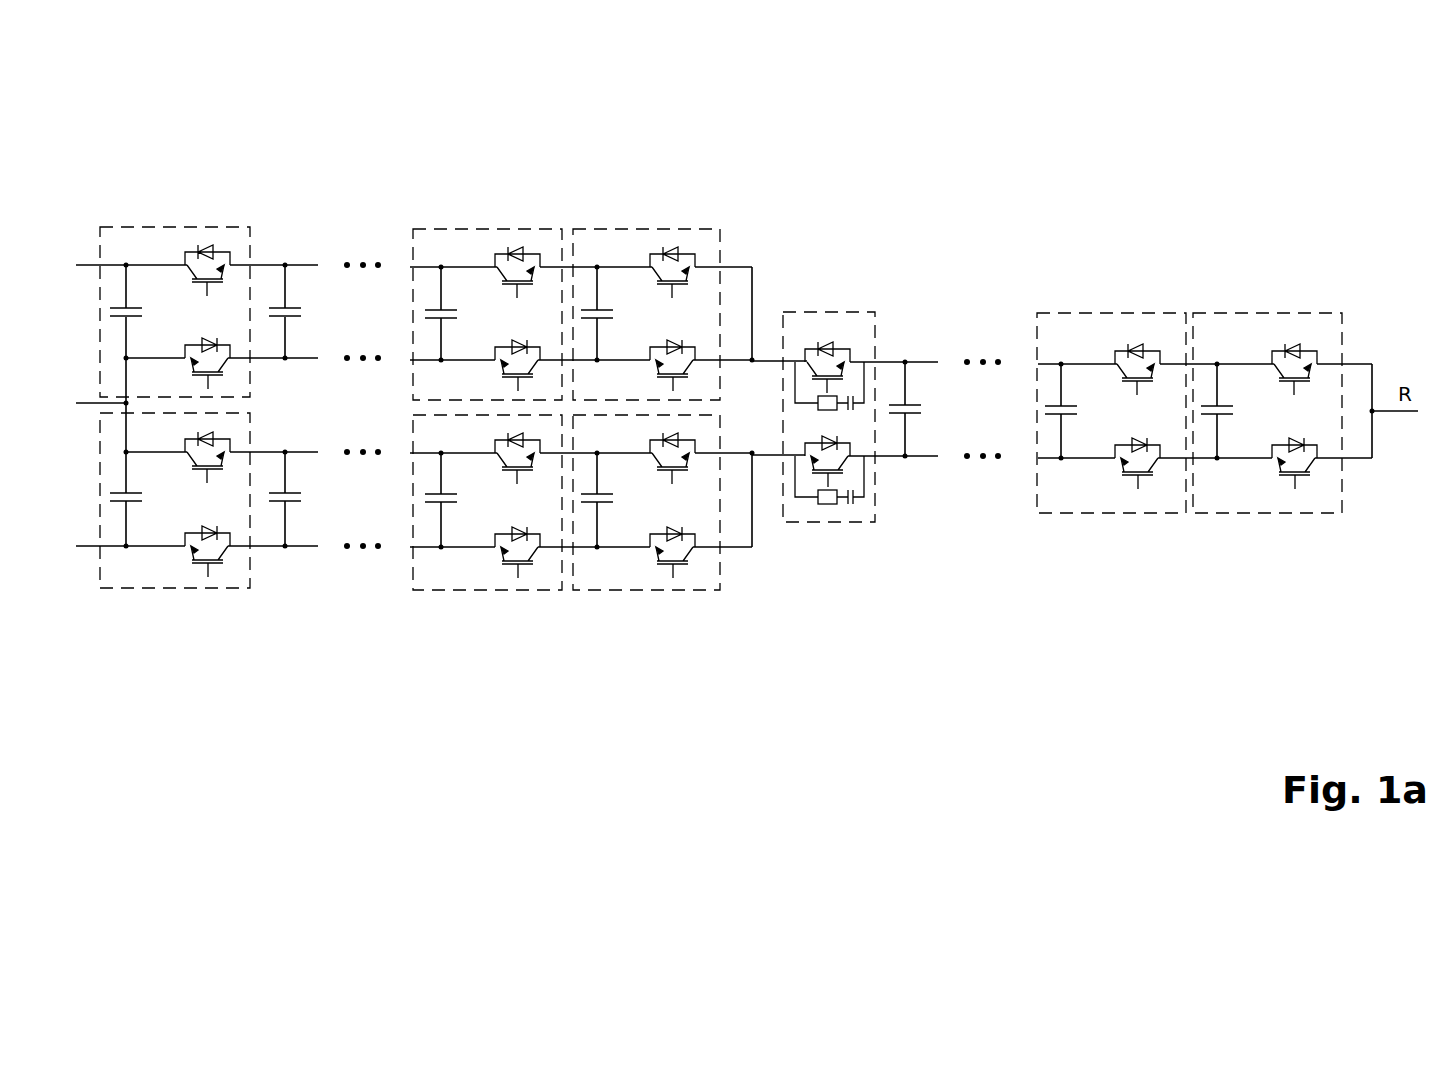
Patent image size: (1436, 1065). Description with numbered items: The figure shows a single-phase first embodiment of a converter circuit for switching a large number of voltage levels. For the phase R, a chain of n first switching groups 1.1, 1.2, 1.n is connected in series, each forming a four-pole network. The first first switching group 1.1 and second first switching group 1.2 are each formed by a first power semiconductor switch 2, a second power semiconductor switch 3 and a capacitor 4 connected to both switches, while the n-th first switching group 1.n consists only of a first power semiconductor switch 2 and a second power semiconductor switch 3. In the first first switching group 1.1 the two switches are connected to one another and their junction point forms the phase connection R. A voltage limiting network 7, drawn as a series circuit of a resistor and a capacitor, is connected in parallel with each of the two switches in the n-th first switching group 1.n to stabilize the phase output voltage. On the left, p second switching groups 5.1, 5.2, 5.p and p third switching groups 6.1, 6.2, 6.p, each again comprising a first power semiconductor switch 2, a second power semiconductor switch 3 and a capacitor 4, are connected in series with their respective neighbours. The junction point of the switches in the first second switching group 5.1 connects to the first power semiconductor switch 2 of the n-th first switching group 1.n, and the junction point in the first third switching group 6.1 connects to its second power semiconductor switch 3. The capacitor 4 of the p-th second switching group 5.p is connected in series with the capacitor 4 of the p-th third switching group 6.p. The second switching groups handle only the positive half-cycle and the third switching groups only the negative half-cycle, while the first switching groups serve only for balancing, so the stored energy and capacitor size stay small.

The first first switching group 1.1 is at (1263, 313).
The second first switching group 1.2 is at (1110, 313).
The n-th first switching group 1.n is at (830, 312).
The first power semiconductor switch 2 is at (193, 238).
The second power semiconductor switch 3 is at (190, 333).
The capacitor 4 is at (140, 305).
The first second switching group 5.1 is at (658, 229).
The second second switching group 5.2 is at (450, 229).
The p-th second switching group 5.p is at (243, 227).
The first third switching group 6.1 is at (680, 590).
The second third switching group 6.2 is at (422, 590).
The p-th third switching group 6.p is at (237, 588).
The voltage limiting network 7 is at (852, 390).